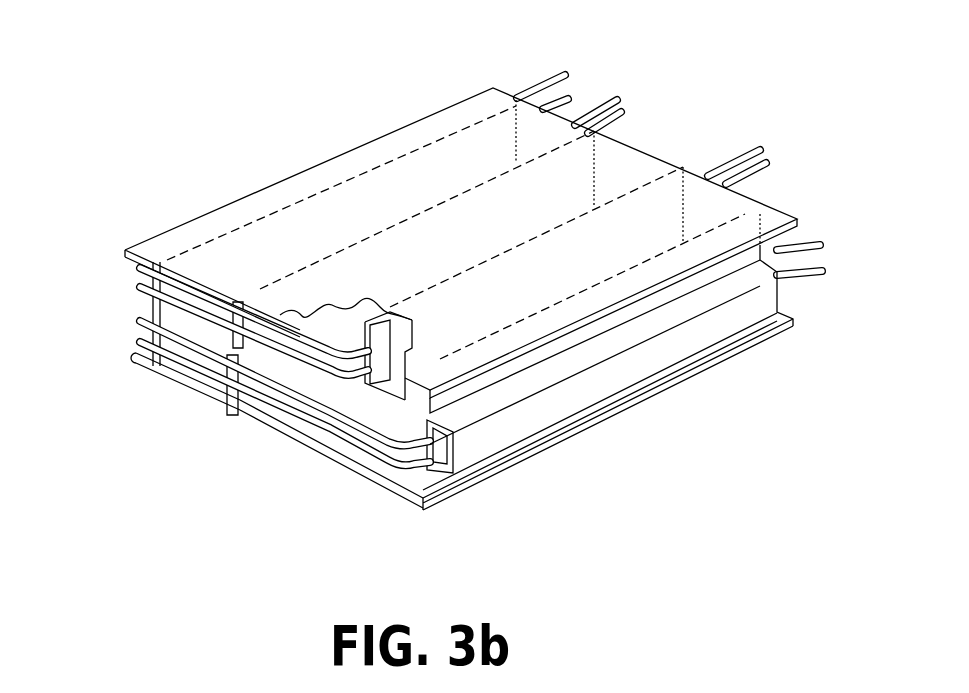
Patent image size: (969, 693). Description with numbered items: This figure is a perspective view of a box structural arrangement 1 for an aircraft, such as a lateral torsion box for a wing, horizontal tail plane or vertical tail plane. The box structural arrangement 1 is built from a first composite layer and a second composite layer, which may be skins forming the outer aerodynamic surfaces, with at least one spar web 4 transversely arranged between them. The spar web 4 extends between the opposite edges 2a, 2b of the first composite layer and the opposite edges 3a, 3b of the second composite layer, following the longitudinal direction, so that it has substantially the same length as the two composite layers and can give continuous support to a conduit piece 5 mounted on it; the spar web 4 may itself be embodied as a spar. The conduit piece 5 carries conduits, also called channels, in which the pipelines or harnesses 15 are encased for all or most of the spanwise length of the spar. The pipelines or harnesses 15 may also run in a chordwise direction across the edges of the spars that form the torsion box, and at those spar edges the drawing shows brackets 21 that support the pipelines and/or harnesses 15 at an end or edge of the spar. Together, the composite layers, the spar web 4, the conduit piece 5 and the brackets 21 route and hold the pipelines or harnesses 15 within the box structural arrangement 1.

The box structural arrangement 1 is at (340, 128).
The edge of first composite layer 2a is at (281, 314).
The edge of first composite layer 2b is at (637, 136).
The edge of second composite layer 3a is at (407, 500).
The edge of second composite layer 3b is at (787, 307).
The spar web 4 is at (415, 413).
The conduit piece 5 is at (665, 350).
The pipelines or harnesses 15 is at (180, 365).
The brackets 21 is at (232, 412).